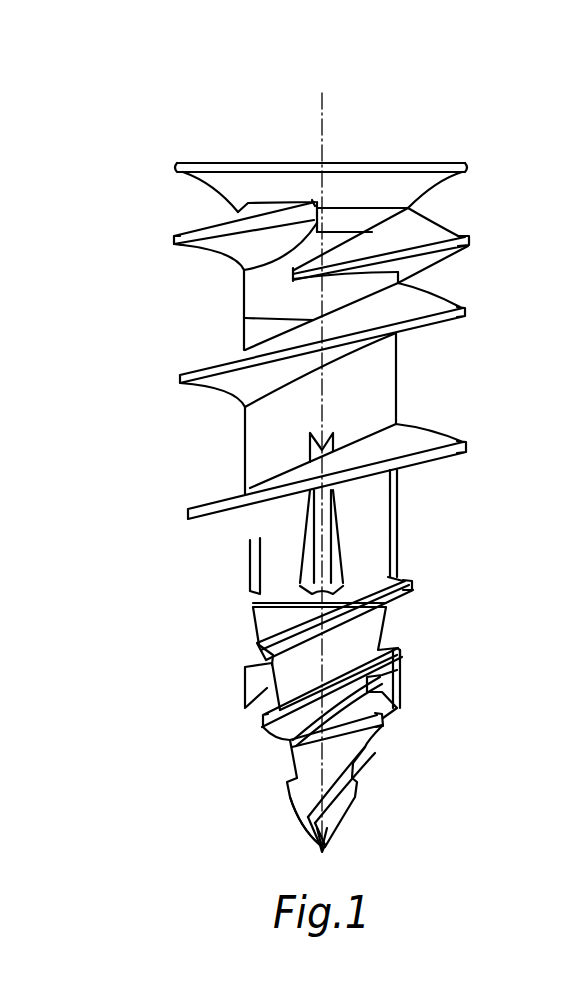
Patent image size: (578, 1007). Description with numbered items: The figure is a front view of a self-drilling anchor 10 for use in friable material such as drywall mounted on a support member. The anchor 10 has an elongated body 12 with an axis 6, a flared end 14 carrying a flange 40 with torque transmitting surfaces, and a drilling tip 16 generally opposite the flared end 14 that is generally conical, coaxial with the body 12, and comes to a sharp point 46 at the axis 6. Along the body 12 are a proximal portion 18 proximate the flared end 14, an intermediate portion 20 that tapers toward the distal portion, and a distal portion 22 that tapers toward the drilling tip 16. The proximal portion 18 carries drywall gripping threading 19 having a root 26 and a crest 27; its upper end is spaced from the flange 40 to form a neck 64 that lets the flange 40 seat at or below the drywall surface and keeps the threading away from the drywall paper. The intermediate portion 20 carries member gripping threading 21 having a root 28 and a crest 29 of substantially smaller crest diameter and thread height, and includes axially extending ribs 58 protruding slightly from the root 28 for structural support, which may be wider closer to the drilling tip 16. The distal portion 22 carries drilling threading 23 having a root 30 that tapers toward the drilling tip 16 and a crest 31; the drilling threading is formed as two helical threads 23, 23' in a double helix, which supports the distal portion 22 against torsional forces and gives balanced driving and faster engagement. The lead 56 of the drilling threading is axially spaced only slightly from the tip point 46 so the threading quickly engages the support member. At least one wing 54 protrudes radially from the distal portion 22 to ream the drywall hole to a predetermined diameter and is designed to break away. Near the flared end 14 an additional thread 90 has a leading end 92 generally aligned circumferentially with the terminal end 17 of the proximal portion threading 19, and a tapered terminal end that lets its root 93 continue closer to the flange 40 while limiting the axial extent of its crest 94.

The self-drilling anchor 10 is at (122, 158).
The axis 6 is at (323, 112).
The elongated body 12 is at (383, 380).
The flared end 14 is at (428, 186).
The drilling tip 16 is at (328, 827).
The terminal end of proximal portion threading 17 is at (310, 203).
The proximal portion 18 is at (194, 338).
The drywall gripping threading 19 is at (448, 303).
The intermediate portion 20 is at (196, 555).
The member gripping threading 21 is at (399, 575).
The distal portion 22 is at (230, 803).
The drilling threading 23 is at (375, 774).
The second helical thread 23' is at (386, 683).
The root 26 is at (243, 302).
The crest 27 is at (176, 240).
The root 28 is at (252, 593).
The crest 29 is at (412, 584).
The root 30 is at (293, 755).
The crest 31 is at (384, 720).
The flange 40 is at (249, 162).
The point 46 is at (324, 858).
The wing 54 is at (244, 685).
The lead 56 is at (318, 843).
The ribs 58 is at (324, 517).
The neck 64 is at (226, 199).
The additional thread 90 is at (445, 226).
The leading end 92 is at (262, 277).
The root 93 is at (350, 238).
The crest 94 is at (470, 240).